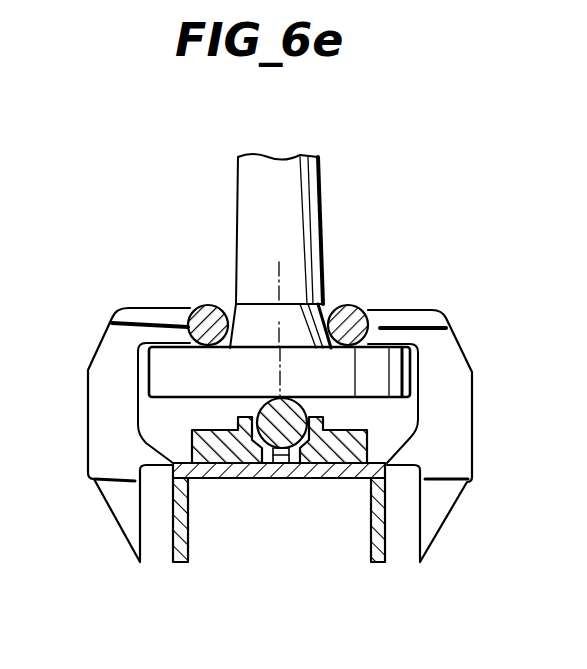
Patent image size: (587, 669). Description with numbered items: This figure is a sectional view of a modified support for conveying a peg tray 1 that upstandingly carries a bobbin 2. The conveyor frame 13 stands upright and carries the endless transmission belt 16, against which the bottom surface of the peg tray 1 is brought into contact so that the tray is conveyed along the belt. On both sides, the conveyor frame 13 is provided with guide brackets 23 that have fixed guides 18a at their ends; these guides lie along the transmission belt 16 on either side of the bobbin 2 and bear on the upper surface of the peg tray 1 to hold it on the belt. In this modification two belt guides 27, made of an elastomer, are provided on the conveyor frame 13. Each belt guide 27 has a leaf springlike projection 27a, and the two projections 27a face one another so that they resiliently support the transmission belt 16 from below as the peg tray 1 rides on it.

The peg tray 1 is at (165, 365).
The bobbin 2 is at (318, 198).
The conveyor frame 13 is at (385, 550).
The endless transmission belt 16 is at (258, 400).
The fixed guide 18a is at (204, 305).
The guide bracket 23 is at (97, 395).
The belt guide 27 is at (193, 442).
The leaf springlike projection 27a is at (283, 477).